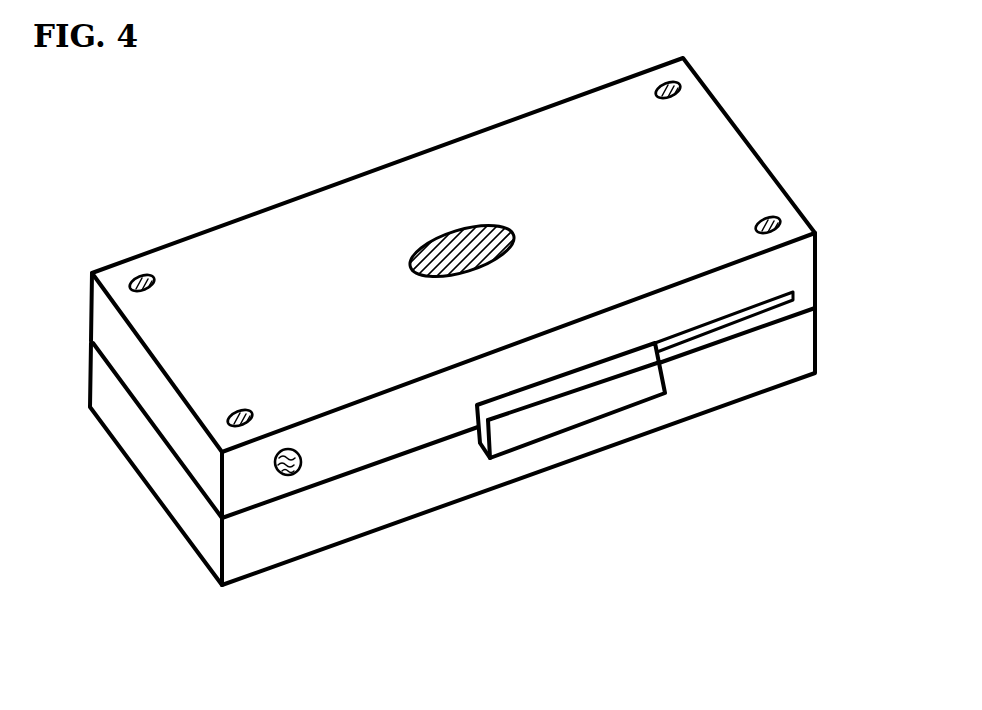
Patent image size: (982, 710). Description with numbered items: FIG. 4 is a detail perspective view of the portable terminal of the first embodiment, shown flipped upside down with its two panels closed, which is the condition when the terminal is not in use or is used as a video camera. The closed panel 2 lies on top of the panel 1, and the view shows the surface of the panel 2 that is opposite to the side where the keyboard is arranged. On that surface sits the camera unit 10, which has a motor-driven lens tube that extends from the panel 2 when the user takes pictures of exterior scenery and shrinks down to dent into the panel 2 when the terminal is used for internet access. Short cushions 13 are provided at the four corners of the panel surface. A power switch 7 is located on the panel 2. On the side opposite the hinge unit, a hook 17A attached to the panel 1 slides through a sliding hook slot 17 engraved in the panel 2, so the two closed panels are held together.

The panel 1 is at (753, 353).
The panel 2 is at (718, 182).
The power switch 7 is at (285, 474).
The camera unit 10 is at (430, 228).
The cushions 13 is at (147, 275).
The sliding hook slot 17 is at (693, 330).
The hook 17A is at (602, 390).